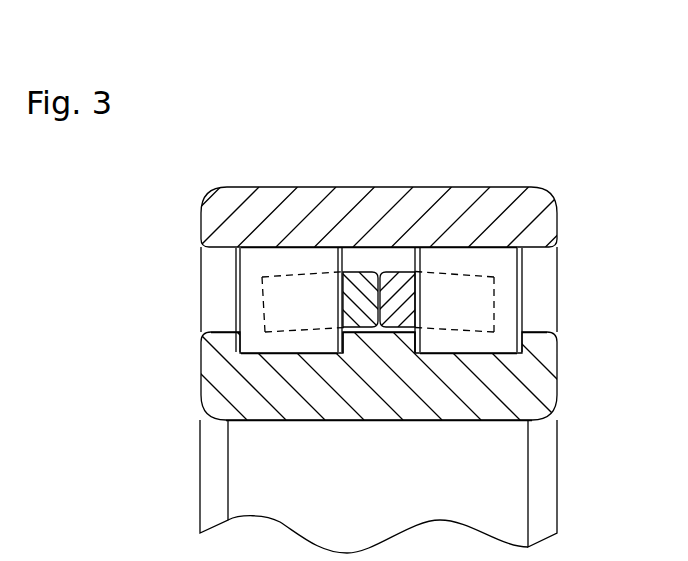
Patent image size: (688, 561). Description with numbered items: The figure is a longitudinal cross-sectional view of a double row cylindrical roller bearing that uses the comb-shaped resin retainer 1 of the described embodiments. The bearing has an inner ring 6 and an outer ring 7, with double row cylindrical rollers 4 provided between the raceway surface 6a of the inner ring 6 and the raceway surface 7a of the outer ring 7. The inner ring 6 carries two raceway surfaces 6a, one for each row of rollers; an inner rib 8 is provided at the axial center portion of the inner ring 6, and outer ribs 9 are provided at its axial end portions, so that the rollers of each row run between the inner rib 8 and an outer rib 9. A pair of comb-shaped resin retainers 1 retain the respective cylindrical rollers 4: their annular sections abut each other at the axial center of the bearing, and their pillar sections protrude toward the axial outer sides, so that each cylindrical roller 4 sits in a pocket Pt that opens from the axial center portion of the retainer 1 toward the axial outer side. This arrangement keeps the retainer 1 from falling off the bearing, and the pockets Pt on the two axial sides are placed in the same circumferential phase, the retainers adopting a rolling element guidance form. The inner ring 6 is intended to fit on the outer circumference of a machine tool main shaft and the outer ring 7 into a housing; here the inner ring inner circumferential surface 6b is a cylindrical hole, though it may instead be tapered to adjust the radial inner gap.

The comb-shaped resin retainer 1 is at (262, 301).
The cylindrical roller 4 is at (250, 268).
The inner ring 6 is at (360, 392).
The raceway surface of the inner ring 6a is at (277, 353).
The inner ring inner circumferential surface 6b is at (243, 424).
The outer ring 7 is at (350, 199).
The raceway surface of the outer ring 7a is at (268, 250).
The inner rib 8 is at (383, 343).
The outer rib 9 is at (218, 346).
The pocket Pt is at (307, 303).